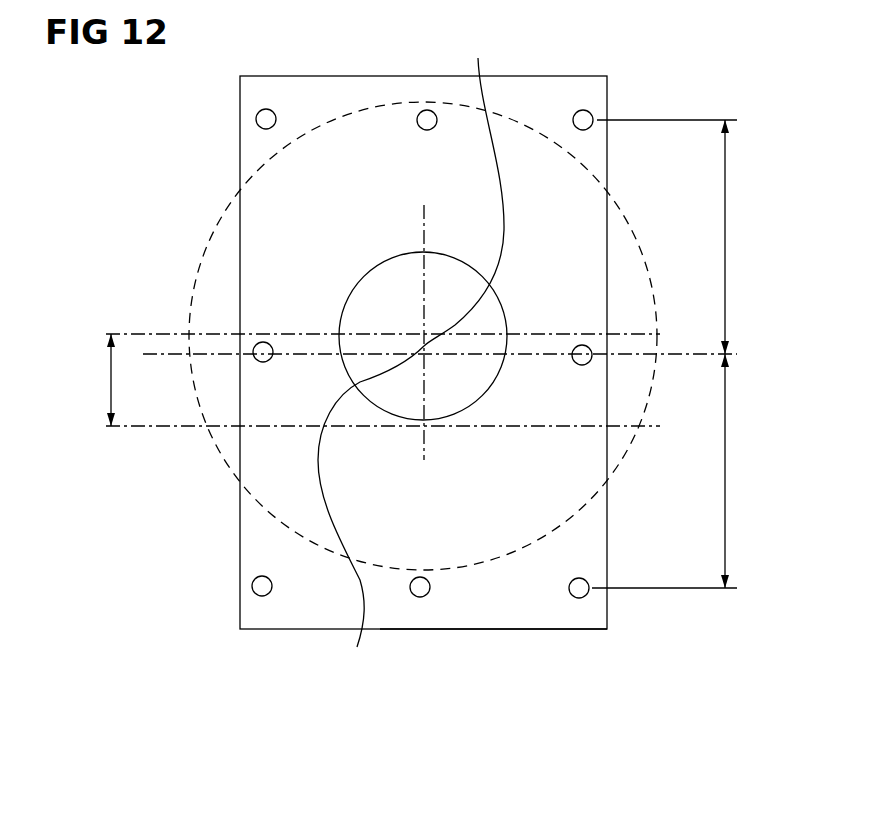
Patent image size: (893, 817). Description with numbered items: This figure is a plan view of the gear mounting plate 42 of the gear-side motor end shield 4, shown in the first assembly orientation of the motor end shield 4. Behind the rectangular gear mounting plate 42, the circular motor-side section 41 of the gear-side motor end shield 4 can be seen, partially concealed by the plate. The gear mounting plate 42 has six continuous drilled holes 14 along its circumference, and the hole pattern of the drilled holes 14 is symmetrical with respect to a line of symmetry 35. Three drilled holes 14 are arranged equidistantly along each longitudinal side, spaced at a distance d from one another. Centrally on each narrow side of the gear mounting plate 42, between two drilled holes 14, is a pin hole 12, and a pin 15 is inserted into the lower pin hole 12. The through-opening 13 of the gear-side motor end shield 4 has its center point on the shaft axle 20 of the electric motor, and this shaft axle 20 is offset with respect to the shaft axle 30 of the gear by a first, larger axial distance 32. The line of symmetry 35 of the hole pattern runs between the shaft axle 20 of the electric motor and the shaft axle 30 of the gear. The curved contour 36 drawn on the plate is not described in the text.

The gear-side motor end shield 4 is at (300, 672).
The pin hole 12 is at (427, 110).
The through-opening 13 is at (392, 282).
The continuous drilled holes 14 is at (266, 108).
The pin 15 is at (420, 598).
The shaft axle of the electric motor 20 is at (464, 187).
The shaft axle of the gear 30 is at (152, 428).
The first, larger axial distance 32 is at (110, 376).
The line of symmetry 35 is at (688, 352).
The curved groove 36 is at (371, 514).
The circular motor-side section 41 is at (640, 247).
The gear mounting plate 42 is at (497, 631).
The distance d is at (727, 243).